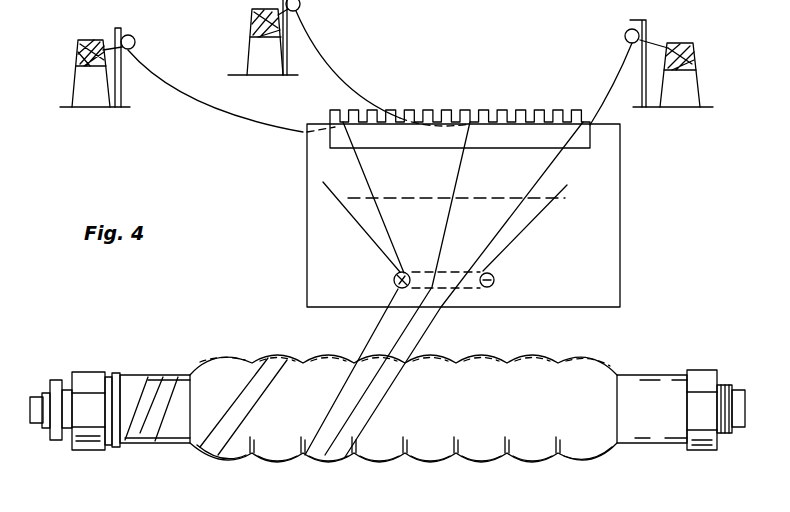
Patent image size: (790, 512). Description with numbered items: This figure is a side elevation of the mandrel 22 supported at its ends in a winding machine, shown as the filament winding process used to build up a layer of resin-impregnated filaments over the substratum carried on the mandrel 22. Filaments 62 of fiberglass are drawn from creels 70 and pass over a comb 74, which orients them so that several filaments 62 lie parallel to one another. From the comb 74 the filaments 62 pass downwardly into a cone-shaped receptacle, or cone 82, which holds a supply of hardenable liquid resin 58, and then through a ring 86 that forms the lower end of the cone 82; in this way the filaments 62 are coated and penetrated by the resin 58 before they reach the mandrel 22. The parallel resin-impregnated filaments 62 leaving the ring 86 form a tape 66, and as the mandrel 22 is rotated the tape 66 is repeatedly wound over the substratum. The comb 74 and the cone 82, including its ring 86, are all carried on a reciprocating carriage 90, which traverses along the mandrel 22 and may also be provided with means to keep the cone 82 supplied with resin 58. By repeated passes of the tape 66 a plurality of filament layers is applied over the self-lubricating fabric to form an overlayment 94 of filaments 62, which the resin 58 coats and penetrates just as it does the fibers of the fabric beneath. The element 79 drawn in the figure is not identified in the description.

The mandrel 22 is at (660, 377).
The resin 58 is at (358, 198).
The filaments 62 is at (347, 80).
The tape 66 is at (430, 322).
The creels 70 is at (82, 75).
The comb 74 is at (532, 110).
The tape 79 is at (372, 217).
The cone 82 is at (567, 185).
The ring 86 is at (495, 278).
The reciprocating carriage 90 is at (617, 283).
The overlayment 94 is at (223, 455).